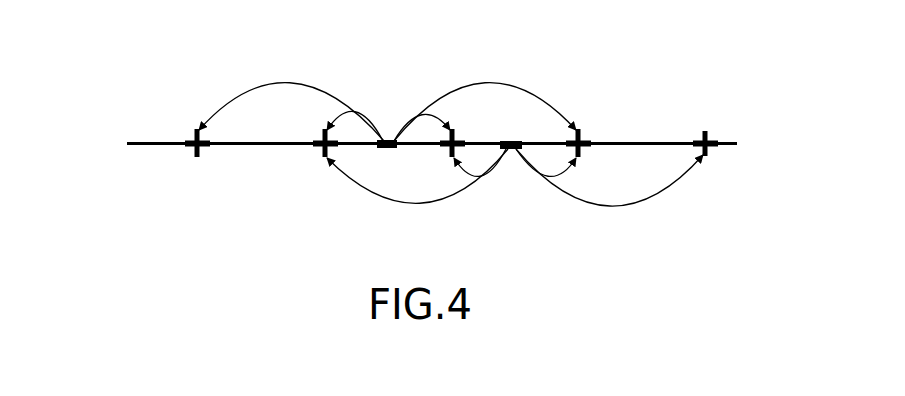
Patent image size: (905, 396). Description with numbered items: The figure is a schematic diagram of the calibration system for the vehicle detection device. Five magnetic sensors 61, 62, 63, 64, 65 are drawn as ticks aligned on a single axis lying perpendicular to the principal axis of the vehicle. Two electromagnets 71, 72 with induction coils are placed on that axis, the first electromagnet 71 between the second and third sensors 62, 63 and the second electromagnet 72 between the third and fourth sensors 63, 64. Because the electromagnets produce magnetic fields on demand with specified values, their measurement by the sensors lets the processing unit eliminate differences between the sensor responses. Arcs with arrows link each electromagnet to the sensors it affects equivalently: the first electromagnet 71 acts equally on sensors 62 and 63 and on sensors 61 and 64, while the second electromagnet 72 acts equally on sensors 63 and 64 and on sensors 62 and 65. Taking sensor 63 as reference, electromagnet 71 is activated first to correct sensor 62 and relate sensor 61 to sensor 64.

The magnetic sensor 61 is at (188, 154).
The magnetic sensor 62 is at (319, 154).
The magnetic sensor 63 is at (459, 131).
The magnetic sensor 64 is at (586, 130).
The magnetic sensor 65 is at (714, 133).
The first electromagnet 71 is at (389, 153).
The second electromagnet 72 is at (515, 158).